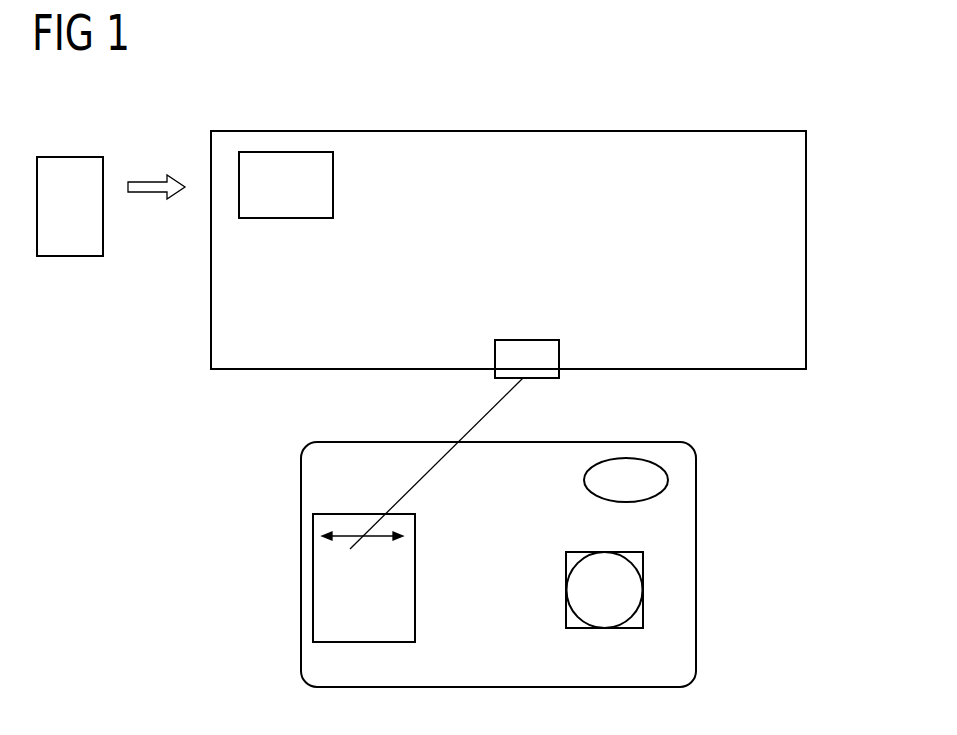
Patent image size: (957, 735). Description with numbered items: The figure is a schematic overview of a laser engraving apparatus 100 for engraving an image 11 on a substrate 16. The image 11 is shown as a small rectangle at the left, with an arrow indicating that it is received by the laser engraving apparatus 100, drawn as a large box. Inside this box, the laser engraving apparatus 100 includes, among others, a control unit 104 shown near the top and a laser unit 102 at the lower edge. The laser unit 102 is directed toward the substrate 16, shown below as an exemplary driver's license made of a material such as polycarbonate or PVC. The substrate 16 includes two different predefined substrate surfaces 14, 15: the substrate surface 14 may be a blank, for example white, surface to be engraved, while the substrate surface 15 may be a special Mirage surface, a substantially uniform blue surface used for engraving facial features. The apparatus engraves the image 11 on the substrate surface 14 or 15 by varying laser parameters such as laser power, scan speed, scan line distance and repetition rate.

The image 11 is at (69, 157).
The laser engraving apparatus 100 is at (807, 248).
The control unit 104 is at (286, 218).
The laser unit 102 is at (528, 339).
The substrate 16 is at (697, 496).
The substrate surface 14 is at (312, 576).
The substrate surface 15 is at (643, 587).